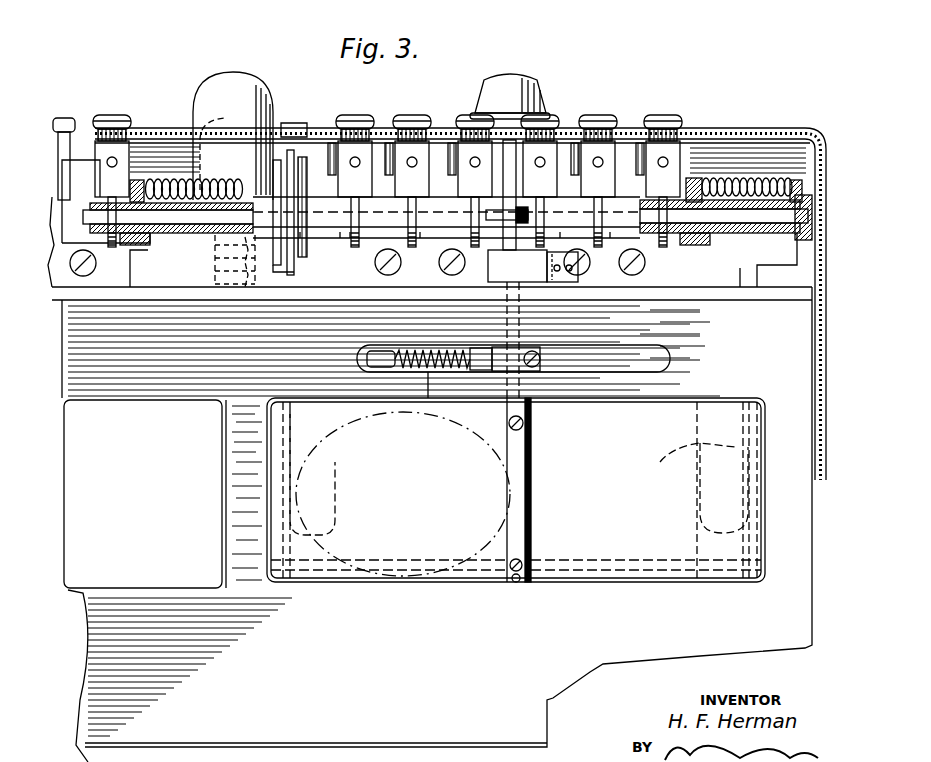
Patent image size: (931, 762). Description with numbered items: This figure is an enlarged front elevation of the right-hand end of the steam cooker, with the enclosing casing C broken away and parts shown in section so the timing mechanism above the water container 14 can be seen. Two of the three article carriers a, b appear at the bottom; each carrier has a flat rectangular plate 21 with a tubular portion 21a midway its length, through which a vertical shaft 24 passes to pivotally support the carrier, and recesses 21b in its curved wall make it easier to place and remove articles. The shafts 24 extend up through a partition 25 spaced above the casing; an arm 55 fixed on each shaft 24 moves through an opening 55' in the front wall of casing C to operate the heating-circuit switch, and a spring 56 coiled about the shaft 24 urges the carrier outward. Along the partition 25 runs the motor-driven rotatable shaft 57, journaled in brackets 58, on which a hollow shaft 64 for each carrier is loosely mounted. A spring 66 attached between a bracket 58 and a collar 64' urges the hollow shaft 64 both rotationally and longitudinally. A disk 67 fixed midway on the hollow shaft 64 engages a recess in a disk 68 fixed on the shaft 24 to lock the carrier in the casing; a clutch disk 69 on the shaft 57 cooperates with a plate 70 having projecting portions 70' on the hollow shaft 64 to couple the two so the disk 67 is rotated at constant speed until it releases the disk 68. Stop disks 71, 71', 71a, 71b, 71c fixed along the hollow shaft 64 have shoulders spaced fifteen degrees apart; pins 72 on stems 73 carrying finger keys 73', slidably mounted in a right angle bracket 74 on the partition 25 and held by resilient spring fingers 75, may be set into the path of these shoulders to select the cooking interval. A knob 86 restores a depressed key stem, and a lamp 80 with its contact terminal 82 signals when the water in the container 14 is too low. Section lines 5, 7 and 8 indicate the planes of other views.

The section line 5 is at (168, 390).
The section line 7 is at (520, 43).
The section line 8 is at (620, 83).
The container 14 is at (334, 278).
The flat wall or plate 21 is at (578, 553).
The tubular portion 21a is at (533, 502).
The recesses 21b is at (332, 476).
The shaft 24 is at (436, 130).
The partition 25 is at (182, 300).
The arm 55 is at (513, 360).
The openings 55' is at (630, 335).
The spring 56 is at (500, 284).
The rotatable shaft 57 is at (88, 212).
The brackets 58 is at (142, 272).
The hollow shaft 64 is at (410, 211).
The collar 64' is at (423, 252).
The spring 66 is at (178, 181).
The disk 67 is at (507, 192).
The disk 68 is at (533, 266).
The disk or clutch member 69 is at (278, 158).
The plate or clutch member 70 is at (304, 206).
The projecting portions 70' is at (305, 217).
The stop disk 71 is at (375, 262).
The stop disk 71' is at (504, 262).
The stop disk 71a is at (373, 264).
The stop disk 71b is at (530, 283).
The stop disk 71c is at (606, 264).
The pins 72 is at (362, 163).
The stems 73 is at (590, 181).
The finger keys or buttons 73' is at (415, 162).
The right angle bracket 74 is at (418, 128).
The resilient spring fingers 75 is at (340, 190).
The electric lamp 80 is at (238, 88).
The contact terminal 82 is at (253, 290).
The knob 86 is at (520, 90).
The enclosing casing C is at (745, 127).
The carrier a is at (628, 550).
The carrier b is at (165, 572).